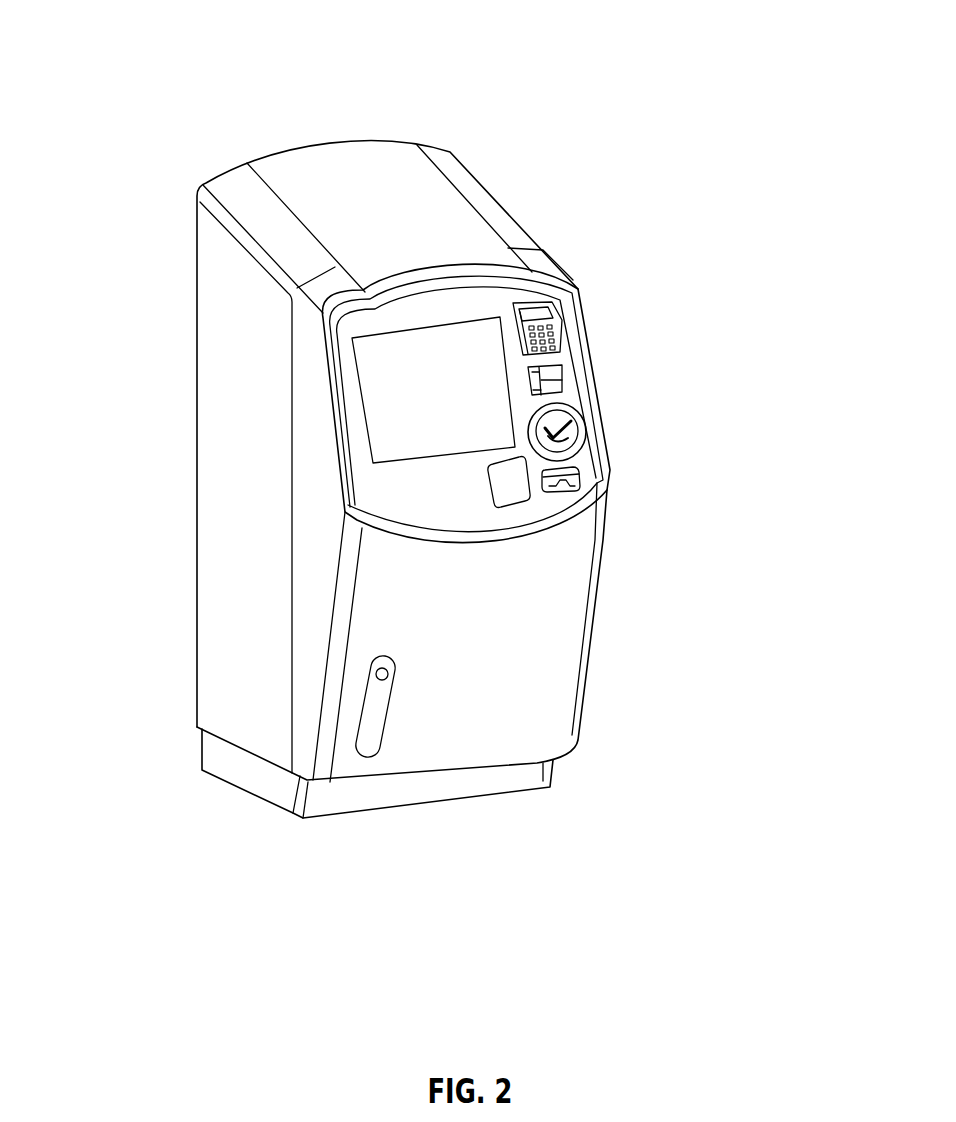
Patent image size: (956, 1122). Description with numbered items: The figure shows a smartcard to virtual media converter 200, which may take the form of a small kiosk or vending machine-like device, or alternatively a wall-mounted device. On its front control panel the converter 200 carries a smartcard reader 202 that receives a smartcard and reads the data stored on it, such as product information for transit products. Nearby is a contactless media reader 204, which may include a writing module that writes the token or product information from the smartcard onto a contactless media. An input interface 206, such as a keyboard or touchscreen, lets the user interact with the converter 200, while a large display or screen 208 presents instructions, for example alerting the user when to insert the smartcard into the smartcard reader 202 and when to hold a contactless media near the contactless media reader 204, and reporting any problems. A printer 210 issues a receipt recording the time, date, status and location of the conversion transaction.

The smartcard to virtual media converter 200 is at (308, 155).
The smartcard reader 202 is at (562, 381).
The contactless media reader 204 is at (517, 505).
The input interface 206 is at (547, 322).
The display or screen 208 is at (357, 398).
The printer 210 is at (580, 478).